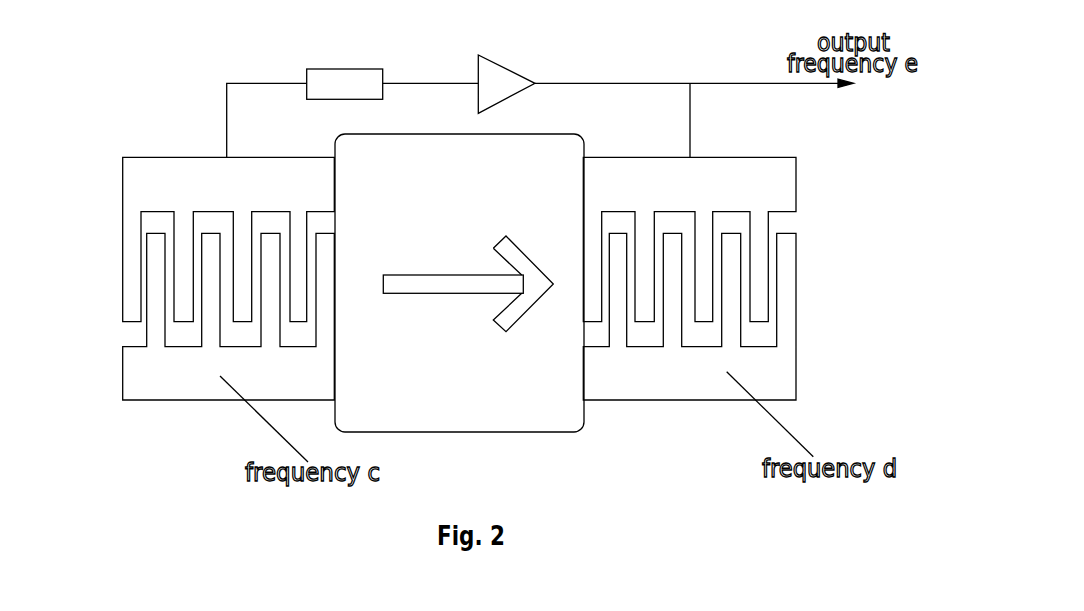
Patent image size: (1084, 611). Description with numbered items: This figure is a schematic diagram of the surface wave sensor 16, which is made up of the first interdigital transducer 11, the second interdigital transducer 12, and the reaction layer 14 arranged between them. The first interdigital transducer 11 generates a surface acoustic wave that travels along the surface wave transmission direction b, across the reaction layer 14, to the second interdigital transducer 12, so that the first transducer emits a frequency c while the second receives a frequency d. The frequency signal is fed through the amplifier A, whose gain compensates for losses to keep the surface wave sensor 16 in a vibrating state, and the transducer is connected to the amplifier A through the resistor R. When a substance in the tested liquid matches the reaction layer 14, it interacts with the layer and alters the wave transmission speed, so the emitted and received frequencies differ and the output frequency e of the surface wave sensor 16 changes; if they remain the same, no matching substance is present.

The first interdigital transducer 11 is at (157, 181).
The second interdigital transducer 12 is at (773, 190).
The reaction layer 14 is at (465, 401).
The surface wave sensor 16 is at (157, 425).
The resistor R is at (336, 82).
The amplifier A is at (502, 82).
The surface wave transmission direction b is at (500, 285).